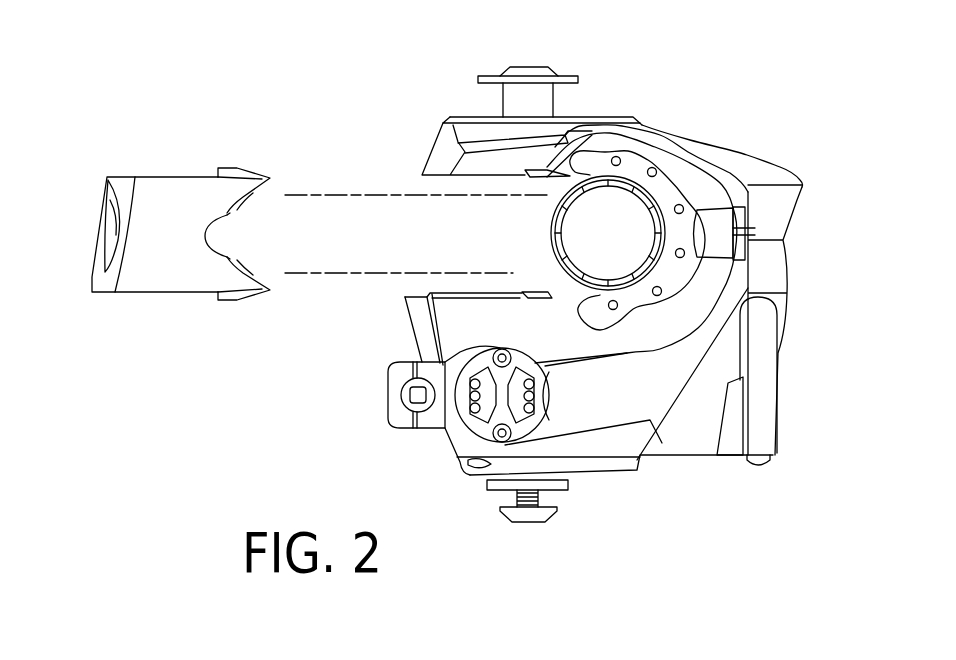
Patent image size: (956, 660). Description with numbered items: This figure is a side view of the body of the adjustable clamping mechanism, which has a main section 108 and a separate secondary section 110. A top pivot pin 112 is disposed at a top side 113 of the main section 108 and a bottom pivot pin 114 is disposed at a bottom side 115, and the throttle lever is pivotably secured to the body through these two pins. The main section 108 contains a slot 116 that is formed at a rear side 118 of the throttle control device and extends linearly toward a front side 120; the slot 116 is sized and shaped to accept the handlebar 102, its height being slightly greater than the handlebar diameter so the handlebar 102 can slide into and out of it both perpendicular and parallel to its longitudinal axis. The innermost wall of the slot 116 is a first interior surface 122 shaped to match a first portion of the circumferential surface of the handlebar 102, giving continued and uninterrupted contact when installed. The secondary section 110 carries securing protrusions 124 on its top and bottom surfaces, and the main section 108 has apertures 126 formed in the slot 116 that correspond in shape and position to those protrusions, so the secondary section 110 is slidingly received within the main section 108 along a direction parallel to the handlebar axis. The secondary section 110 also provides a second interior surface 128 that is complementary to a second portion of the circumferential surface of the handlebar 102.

The handlebar 102 is at (563, 229).
The main section 108 is at (776, 133).
The secondary section 110 is at (105, 312).
The top pivot pin 112 is at (487, 75).
The top side 113 is at (598, 118).
The bottom pivot pin 114 is at (520, 523).
The bottom side 115 is at (610, 477).
The slot 116 is at (415, 253).
The rear side 118 is at (437, 140).
The front side 120 is at (788, 270).
The first interior surface 122 is at (632, 173).
The securing protrusions 124 is at (227, 166).
The apertures 126 is at (548, 296).
The second interior surface 128 is at (246, 207).